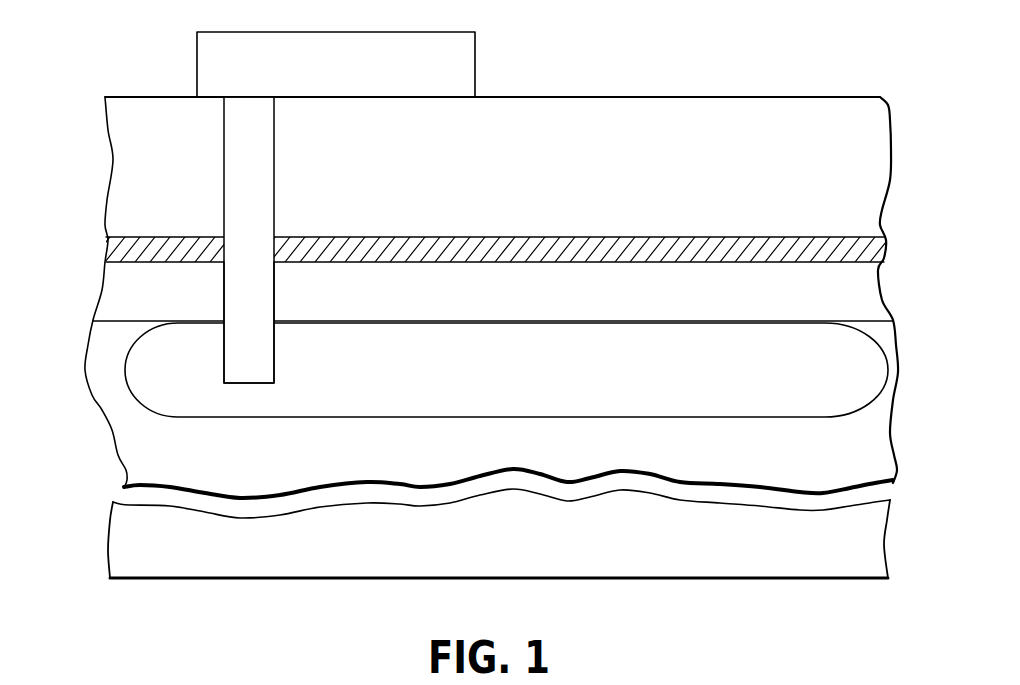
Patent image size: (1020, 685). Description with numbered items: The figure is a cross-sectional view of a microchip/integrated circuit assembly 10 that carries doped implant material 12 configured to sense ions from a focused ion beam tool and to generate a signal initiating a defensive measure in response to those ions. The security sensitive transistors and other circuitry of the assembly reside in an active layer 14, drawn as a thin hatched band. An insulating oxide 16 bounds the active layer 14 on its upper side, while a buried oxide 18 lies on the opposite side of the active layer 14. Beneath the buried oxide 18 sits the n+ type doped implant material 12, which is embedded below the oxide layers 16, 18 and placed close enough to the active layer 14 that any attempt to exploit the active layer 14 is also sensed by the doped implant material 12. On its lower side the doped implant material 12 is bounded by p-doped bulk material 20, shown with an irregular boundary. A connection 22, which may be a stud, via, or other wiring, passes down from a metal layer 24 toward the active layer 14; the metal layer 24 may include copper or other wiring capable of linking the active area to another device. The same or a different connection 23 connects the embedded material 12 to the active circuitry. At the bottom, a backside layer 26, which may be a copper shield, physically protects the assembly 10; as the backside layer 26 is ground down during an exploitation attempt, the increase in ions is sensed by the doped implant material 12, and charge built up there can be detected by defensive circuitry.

The integrated circuit assembly 10 is at (640, 51).
The doped implant material 12 is at (142, 373).
The active layer 14 is at (118, 243).
The insulating oxide 16 is at (130, 167).
The buried oxide 18 is at (108, 290).
The p-doped bulk material 20 is at (140, 456).
The connection 22 is at (274, 183).
The connection 23 is at (274, 291).
The metal layer 24 is at (282, 52).
The backside layer 26 is at (805, 579).